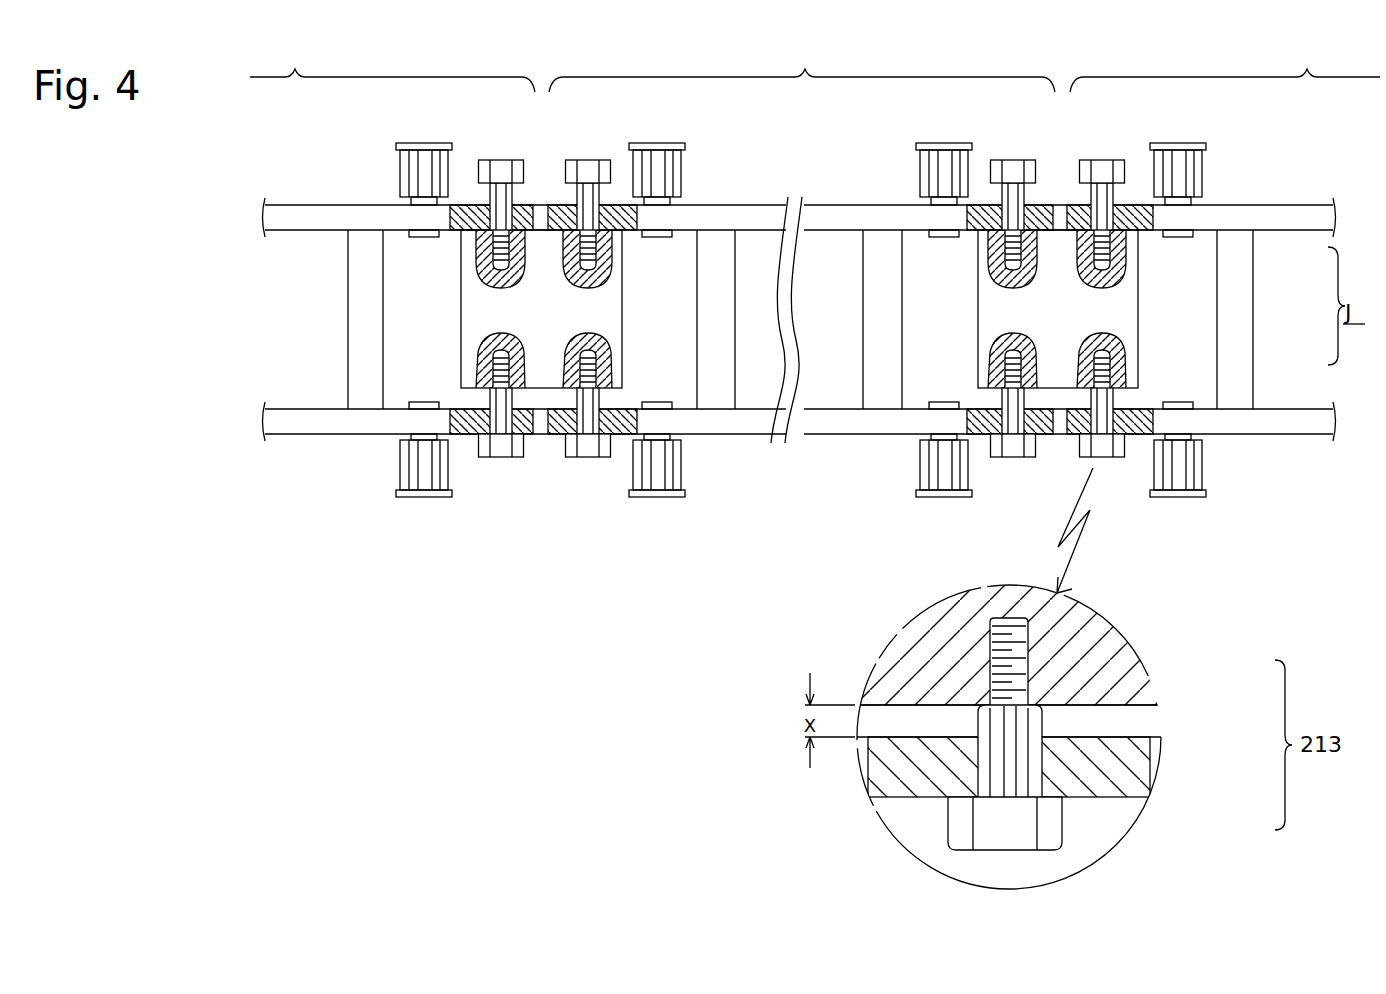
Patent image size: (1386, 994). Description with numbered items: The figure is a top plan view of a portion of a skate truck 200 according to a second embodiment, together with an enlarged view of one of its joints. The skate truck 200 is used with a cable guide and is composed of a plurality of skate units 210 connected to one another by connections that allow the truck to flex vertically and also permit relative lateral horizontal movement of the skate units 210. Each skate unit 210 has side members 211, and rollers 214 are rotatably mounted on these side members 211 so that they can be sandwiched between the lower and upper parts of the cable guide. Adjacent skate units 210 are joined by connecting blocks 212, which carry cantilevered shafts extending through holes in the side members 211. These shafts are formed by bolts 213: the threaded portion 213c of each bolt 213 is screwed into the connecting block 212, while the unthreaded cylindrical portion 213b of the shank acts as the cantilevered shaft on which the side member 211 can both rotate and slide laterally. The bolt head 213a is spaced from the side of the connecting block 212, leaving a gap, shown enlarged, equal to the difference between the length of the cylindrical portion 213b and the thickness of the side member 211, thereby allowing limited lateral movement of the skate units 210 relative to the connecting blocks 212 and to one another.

The skate truck 200 is at (665, 542).
The skate unit 210 is at (815, 67).
The side member 211 is at (300, 222).
The connecting block 212 is at (607, 298).
The bolt 213 is at (501, 166).
The bolt head 213a is at (1055, 820).
The unthreaded cylindrical portion 213b is at (1042, 720).
The threaded portion 213c is at (1028, 670).
The roller 214 is at (400, 173).